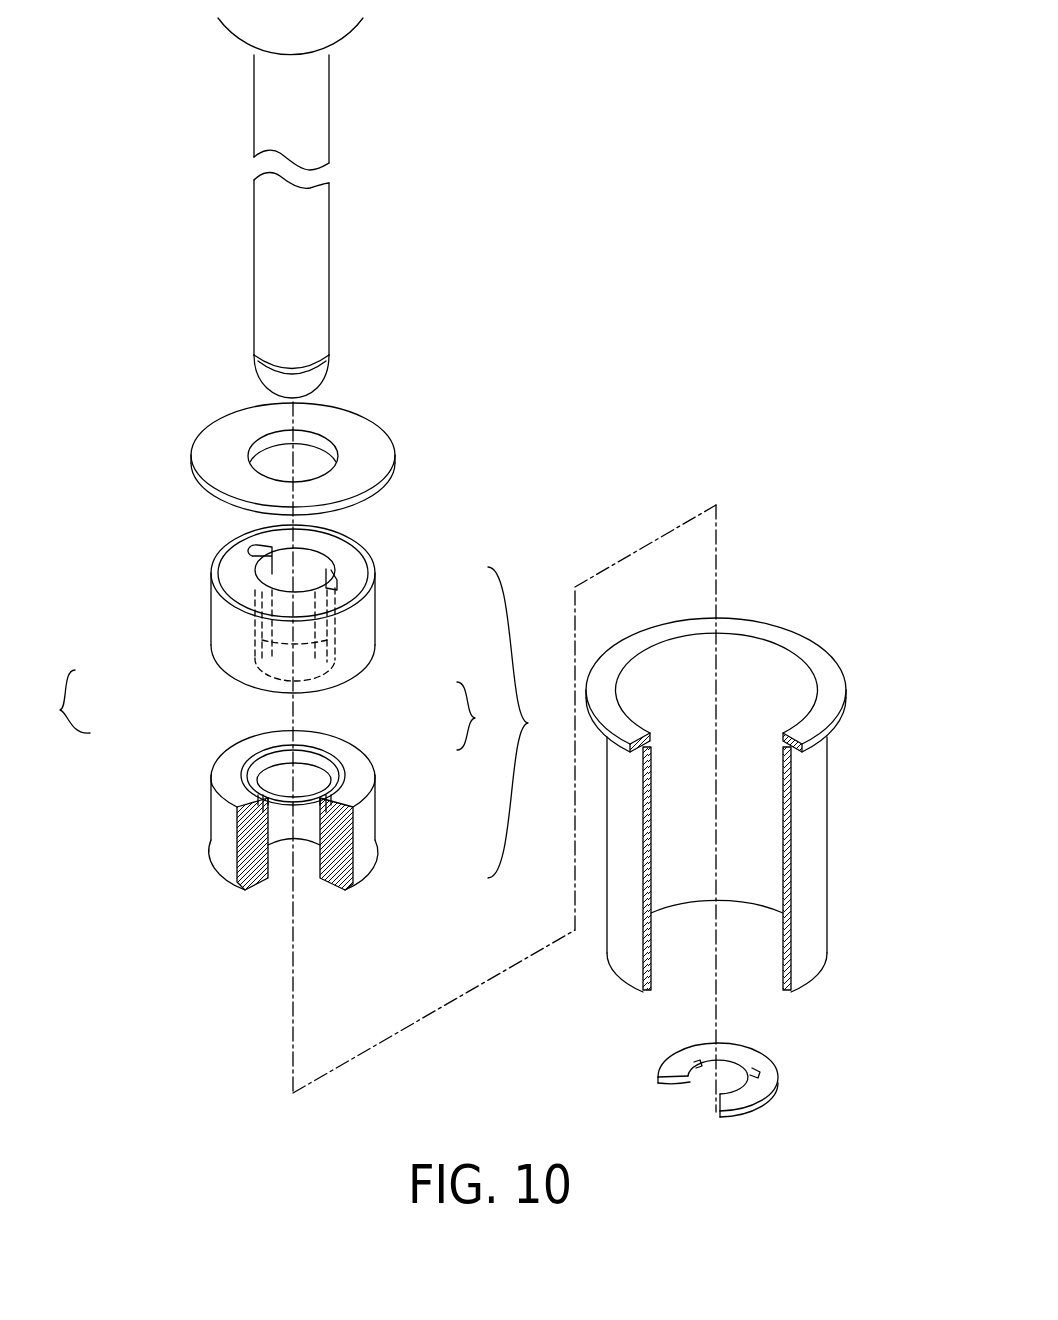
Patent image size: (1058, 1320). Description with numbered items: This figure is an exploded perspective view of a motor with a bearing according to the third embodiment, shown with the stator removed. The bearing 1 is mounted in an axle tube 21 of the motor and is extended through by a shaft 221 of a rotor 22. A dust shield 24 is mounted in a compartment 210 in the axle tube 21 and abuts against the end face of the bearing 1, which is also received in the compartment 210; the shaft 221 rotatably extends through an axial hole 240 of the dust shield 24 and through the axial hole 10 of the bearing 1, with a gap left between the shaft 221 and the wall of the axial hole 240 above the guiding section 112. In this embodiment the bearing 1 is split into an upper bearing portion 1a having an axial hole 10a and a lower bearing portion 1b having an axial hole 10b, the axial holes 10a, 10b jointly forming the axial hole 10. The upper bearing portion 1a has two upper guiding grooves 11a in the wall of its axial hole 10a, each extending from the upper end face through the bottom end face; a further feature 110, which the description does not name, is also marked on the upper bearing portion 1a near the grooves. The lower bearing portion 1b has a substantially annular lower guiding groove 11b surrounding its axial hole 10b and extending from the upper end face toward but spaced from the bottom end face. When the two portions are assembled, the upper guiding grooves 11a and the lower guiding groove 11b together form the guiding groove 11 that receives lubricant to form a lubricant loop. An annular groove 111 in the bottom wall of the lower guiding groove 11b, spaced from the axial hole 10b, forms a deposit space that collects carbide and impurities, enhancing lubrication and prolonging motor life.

The bearing 1 is at (555, 737).
The upper bearing portion 1a is at (341, 587).
The lower bearing portion 1b is at (367, 856).
The axial hole 10 is at (60, 735).
The axial hole of upper bearing portion 10a is at (273, 607).
The axial hole of lower bearing portion 10b is at (280, 808).
The guiding groove 11 is at (500, 735).
The upper guiding groove 11a is at (343, 592).
The lower guiding groove 11b is at (342, 777).
The slot 110 is at (327, 583).
The annular groove 111 is at (367, 831).
The guiding section 112 is at (262, 552).
The axle tube 21 is at (739, 782).
The compartment 210 is at (778, 666).
The rotor 22 is at (338, 35).
The shaft 221 is at (320, 260).
The dust shield 24 is at (299, 437).
The axial hole of dust shield 240 is at (265, 452).